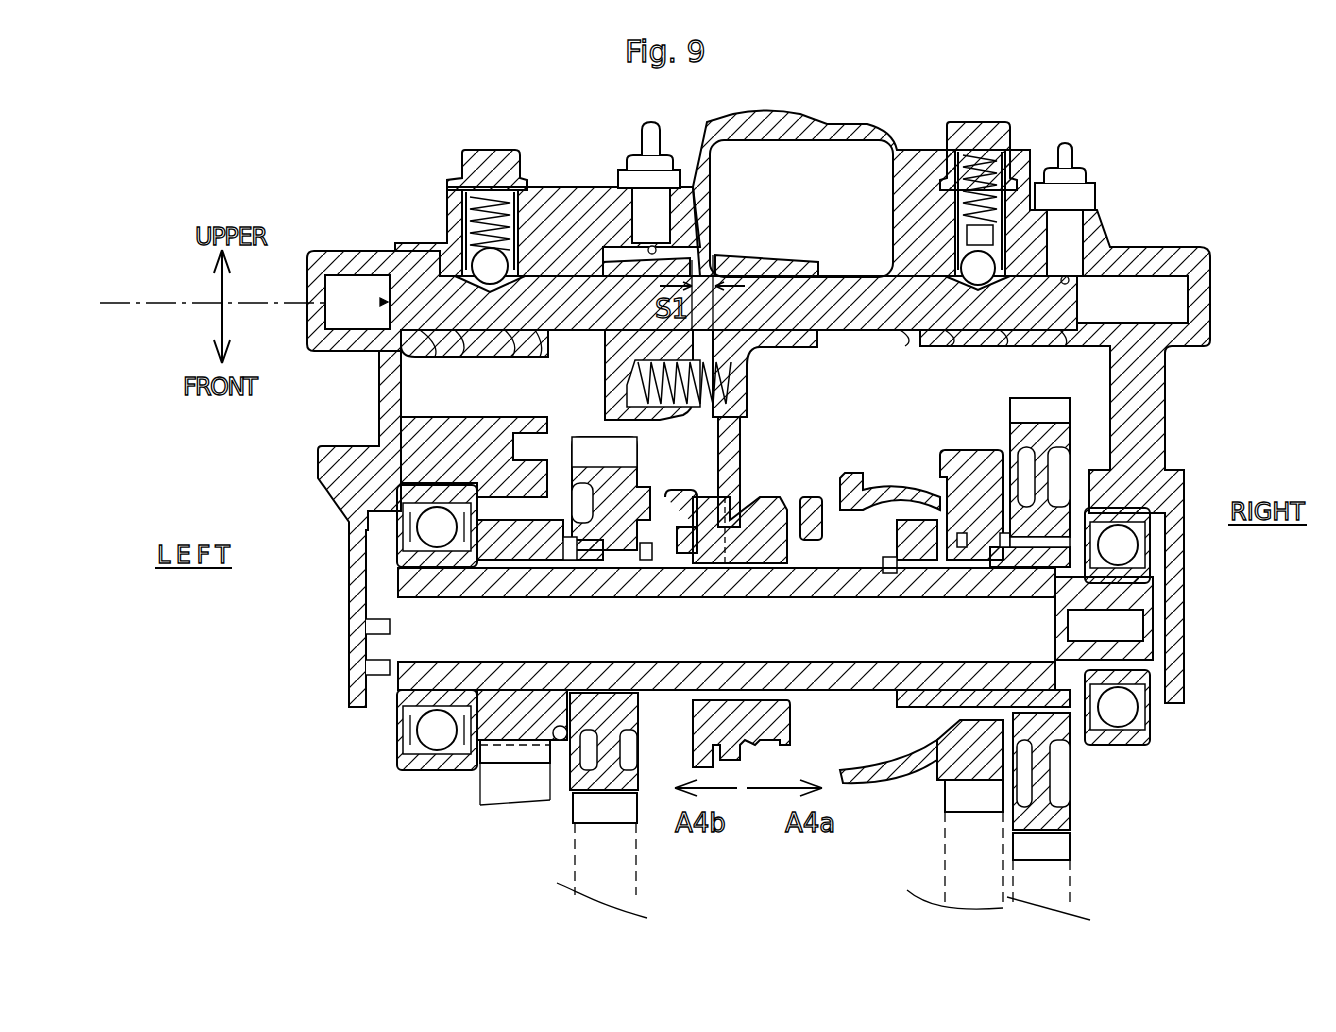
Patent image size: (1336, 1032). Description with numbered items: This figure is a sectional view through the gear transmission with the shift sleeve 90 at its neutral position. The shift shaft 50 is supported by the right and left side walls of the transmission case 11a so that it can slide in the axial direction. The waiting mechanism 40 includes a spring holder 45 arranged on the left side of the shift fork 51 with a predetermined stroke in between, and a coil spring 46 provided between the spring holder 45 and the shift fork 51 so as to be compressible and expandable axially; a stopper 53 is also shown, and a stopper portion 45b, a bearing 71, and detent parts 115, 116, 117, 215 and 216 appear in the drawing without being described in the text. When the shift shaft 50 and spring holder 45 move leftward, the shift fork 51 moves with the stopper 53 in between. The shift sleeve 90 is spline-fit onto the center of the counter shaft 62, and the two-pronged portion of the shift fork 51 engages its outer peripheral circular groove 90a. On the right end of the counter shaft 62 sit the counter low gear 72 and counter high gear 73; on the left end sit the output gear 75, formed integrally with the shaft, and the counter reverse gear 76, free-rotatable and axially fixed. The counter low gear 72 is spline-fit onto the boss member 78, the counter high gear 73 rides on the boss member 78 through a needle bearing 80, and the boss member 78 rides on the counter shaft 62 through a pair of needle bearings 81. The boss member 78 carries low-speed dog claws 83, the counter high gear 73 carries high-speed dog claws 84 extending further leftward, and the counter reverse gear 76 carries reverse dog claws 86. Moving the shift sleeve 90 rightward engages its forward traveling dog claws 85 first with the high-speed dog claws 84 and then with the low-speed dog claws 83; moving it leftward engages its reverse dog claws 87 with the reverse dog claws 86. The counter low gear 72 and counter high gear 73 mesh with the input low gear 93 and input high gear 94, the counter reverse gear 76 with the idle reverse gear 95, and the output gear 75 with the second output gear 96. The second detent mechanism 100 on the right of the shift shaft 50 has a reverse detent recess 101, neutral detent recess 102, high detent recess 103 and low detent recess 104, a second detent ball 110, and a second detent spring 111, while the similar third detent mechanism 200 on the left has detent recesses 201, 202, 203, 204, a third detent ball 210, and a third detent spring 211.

The transmission case 11a is at (348, 530).
The waiting mechanism 40 is at (745, 383).
The spring holder 45 is at (640, 403).
The stopper portion 45b is at (684, 248).
The coil spring 46 is at (697, 392).
The shift shaft 50 is at (857, 318).
The shift fork 51 is at (740, 460).
The stopper 53 is at (812, 266).
The counter shaft 62 is at (443, 590).
The bearing 71 is at (417, 767).
The counter low gear 72 is at (1050, 828).
The counter high gear 73 is at (965, 770).
The output gear 75 is at (507, 735).
The counter reverse gear 76 is at (627, 783).
The boss member 78 is at (948, 555).
The needle bearing 80 is at (968, 540).
The needle bearings 81 is at (913, 572).
The low-speed dog claws 83 is at (923, 547).
The high-speed dog claws 84 is at (852, 506).
The forward traveling dog claws 85 is at (810, 497).
The reverse dog claws 86 is at (633, 545).
The reverse dog claws 87 is at (680, 520).
The shift sleeve 90 is at (755, 545).
The outer peripheral circular groove 90a is at (732, 530).
The input low gear 93 is at (1067, 873).
The input high gear 94 is at (960, 865).
The idle reverse gear 95 is at (607, 877).
The second output gear 96 is at (519, 785).
The second detent mechanism 100 is at (985, 184).
The reverse detent recess 101 is at (1070, 328).
The neutral detent recess 102 is at (1000, 325).
The high detent recess 103 is at (940, 325).
The low detent recess 104 is at (900, 325).
The second detent ball 110 is at (975, 270).
The second detent spring 111 is at (957, 190).
The detent spring 115 is at (985, 135).
The detent sleeve 116 is at (955, 185).
The detent plunger 117 is at (965, 237).
The third detent mechanism 200 is at (436, 201).
The detent recess 201 is at (547, 345).
The detent recess 202 is at (517, 335).
The detent recess 203 is at (485, 335).
The detent recess 204 is at (412, 322).
The third detent ball 210 is at (490, 263).
The third detent spring 211 is at (440, 190).
The detent spring 215 is at (525, 165).
The detent sleeve 216 is at (460, 218).